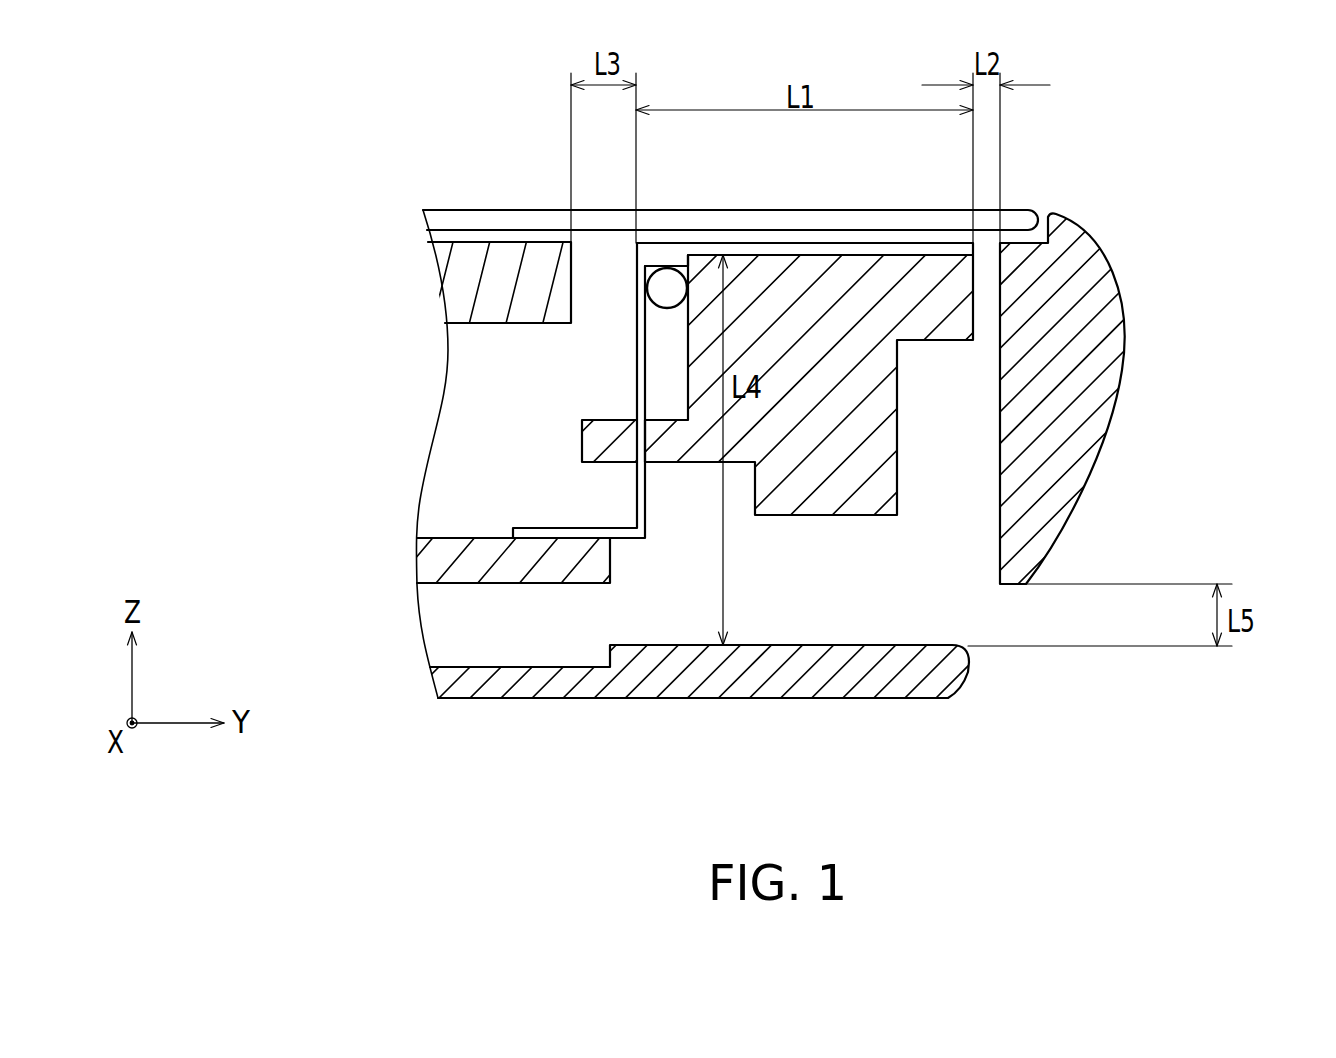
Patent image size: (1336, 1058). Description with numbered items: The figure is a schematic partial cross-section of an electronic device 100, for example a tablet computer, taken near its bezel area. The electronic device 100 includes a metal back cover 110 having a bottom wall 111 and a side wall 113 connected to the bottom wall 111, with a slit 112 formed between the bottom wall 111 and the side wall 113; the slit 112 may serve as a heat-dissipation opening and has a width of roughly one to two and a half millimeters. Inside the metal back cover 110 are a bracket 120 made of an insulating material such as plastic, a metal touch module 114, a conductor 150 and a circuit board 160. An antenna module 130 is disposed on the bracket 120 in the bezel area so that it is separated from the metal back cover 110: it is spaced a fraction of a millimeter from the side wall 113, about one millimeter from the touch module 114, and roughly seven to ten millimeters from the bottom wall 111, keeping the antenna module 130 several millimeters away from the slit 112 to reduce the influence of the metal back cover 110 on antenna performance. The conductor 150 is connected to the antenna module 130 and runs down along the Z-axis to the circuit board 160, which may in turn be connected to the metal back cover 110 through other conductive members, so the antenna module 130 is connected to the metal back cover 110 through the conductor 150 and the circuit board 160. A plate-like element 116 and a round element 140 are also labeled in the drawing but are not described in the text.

The electronic device 100 is at (1135, 180).
The metal back cover 110 is at (855, 505).
The bottom wall 111 is at (770, 688).
The slit 112 is at (983, 617).
The side wall 113 is at (1103, 387).
The touch module 114 is at (467, 281).
The top cover plate 116 is at (483, 215).
The bracket 120 is at (903, 285).
The antenna module 130 is at (817, 250).
The roller / ball 140 is at (667, 287).
The conductor 150 is at (578, 532).
The circuit board 160 is at (428, 559).